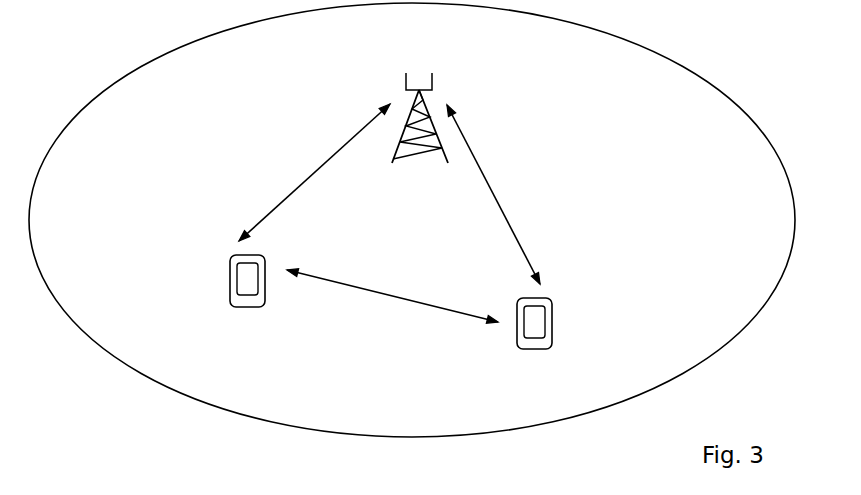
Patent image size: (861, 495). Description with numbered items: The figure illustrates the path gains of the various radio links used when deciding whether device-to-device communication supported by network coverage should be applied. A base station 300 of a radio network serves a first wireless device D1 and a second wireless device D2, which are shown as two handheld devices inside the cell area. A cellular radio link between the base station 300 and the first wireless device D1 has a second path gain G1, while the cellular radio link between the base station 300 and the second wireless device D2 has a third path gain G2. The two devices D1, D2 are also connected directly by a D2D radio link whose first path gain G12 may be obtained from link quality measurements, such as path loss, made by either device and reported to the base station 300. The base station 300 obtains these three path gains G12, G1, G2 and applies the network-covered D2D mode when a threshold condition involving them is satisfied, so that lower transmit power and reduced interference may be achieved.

The base station 300 is at (447, 65).
The first wireless device D1 is at (265, 292).
The second wireless device D2 is at (552, 333).
The second path gain G1 is at (317, 170).
The third path gain G2 is at (487, 177).
The first path gain G12 is at (377, 297).